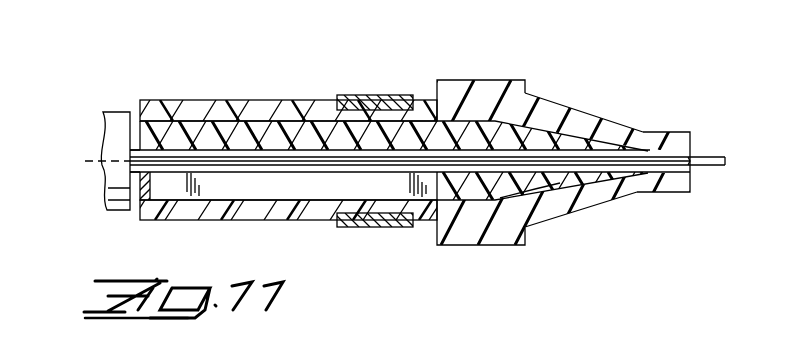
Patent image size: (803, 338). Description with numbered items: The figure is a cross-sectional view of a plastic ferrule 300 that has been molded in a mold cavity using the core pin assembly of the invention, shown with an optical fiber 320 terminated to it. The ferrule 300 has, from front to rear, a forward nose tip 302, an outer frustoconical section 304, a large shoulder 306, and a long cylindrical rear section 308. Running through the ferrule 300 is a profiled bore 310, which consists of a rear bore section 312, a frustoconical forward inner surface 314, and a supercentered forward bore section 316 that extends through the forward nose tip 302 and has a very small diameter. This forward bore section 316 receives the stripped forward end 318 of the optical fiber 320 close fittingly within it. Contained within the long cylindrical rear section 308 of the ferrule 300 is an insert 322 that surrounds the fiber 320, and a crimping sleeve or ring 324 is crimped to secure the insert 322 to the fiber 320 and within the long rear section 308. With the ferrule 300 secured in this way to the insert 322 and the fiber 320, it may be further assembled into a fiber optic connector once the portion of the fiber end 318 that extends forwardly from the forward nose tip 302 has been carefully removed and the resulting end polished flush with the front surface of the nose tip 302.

The plastic ferrule 300 is at (435, 74).
The forward nose tip 302 is at (650, 130).
The outer frustoconical section 304 is at (573, 108).
The large shoulder 306 is at (470, 80).
The long cylindrical rear section 308 is at (272, 100).
The profiled bore 310 is at (163, 187).
The rear bore section 312 is at (275, 200).
The frustoconical forward inner surface 314 is at (540, 183).
The supercentered forward bore section 316 is at (690, 166).
The stripped forward end of optical fiber 318 is at (705, 157).
The optical fiber 320 is at (132, 152).
The insert 322 is at (172, 130).
The crimping sleeve or ring 324 is at (385, 228).